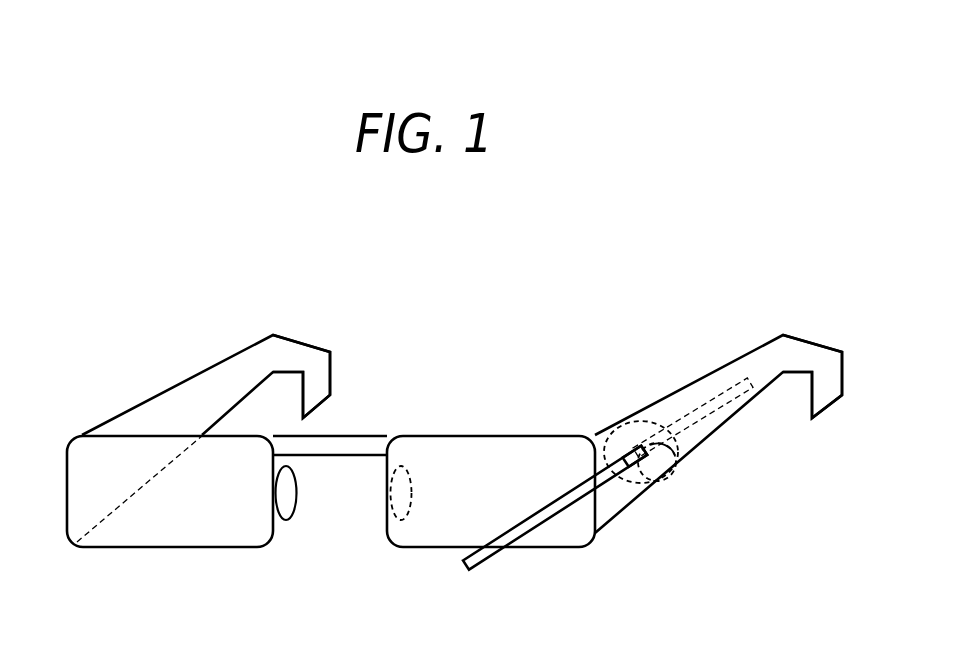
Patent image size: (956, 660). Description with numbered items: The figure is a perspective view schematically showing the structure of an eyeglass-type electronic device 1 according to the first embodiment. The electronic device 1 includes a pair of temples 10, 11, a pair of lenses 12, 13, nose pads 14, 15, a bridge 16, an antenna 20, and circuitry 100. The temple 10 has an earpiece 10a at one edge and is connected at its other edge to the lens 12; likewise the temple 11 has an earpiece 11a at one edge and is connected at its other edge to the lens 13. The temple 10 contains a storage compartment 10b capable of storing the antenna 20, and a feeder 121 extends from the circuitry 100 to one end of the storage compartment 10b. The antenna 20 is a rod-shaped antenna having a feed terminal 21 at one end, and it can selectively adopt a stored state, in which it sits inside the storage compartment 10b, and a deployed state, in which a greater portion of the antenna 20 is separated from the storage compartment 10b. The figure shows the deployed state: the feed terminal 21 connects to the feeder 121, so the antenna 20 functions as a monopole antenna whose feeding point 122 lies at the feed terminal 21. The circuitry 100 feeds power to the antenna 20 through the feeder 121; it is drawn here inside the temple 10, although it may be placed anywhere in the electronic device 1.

The electronic device 1 is at (484, 311).
The temple 10 is at (707, 375).
The earpiece 10a is at (807, 348).
The storage compartment 10b is at (725, 396).
The temple 11 is at (192, 378).
The earpiece 11a is at (297, 348).
The lens 12 is at (447, 522).
The lens 13 is at (167, 513).
The nose pad 14 is at (390, 523).
The nose pad 15 is at (285, 520).
The bridge 16 is at (355, 435).
The antenna 20 is at (492, 550).
The feed terminal 21 is at (633, 468).
The circuitry 100 is at (618, 423).
The feeder 121 is at (653, 482).
The feeding point 122 is at (678, 448).